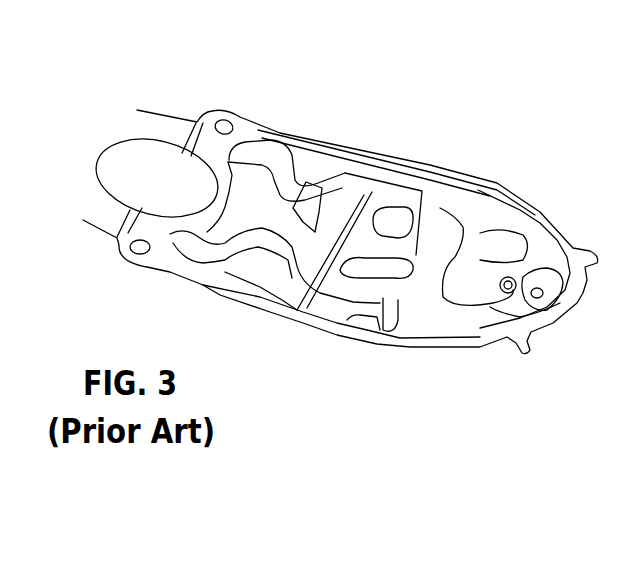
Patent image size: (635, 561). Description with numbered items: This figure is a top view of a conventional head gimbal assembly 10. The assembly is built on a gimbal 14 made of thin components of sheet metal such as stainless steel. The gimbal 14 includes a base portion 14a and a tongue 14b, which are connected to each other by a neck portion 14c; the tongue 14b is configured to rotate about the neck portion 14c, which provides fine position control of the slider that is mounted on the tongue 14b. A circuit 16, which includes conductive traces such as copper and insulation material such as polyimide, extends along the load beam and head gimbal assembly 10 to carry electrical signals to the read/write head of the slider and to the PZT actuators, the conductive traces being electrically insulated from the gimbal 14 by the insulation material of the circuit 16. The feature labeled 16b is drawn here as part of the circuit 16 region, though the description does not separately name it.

The head gimbal assembly 10 is at (480, 120).
The gimbal 14 is at (498, 182).
The base portion 14a is at (353, 240).
The tongue 14b is at (470, 272).
The neck portion 14c is at (412, 253).
The circuit 16 is at (300, 187).
The post 16b is at (442, 218).